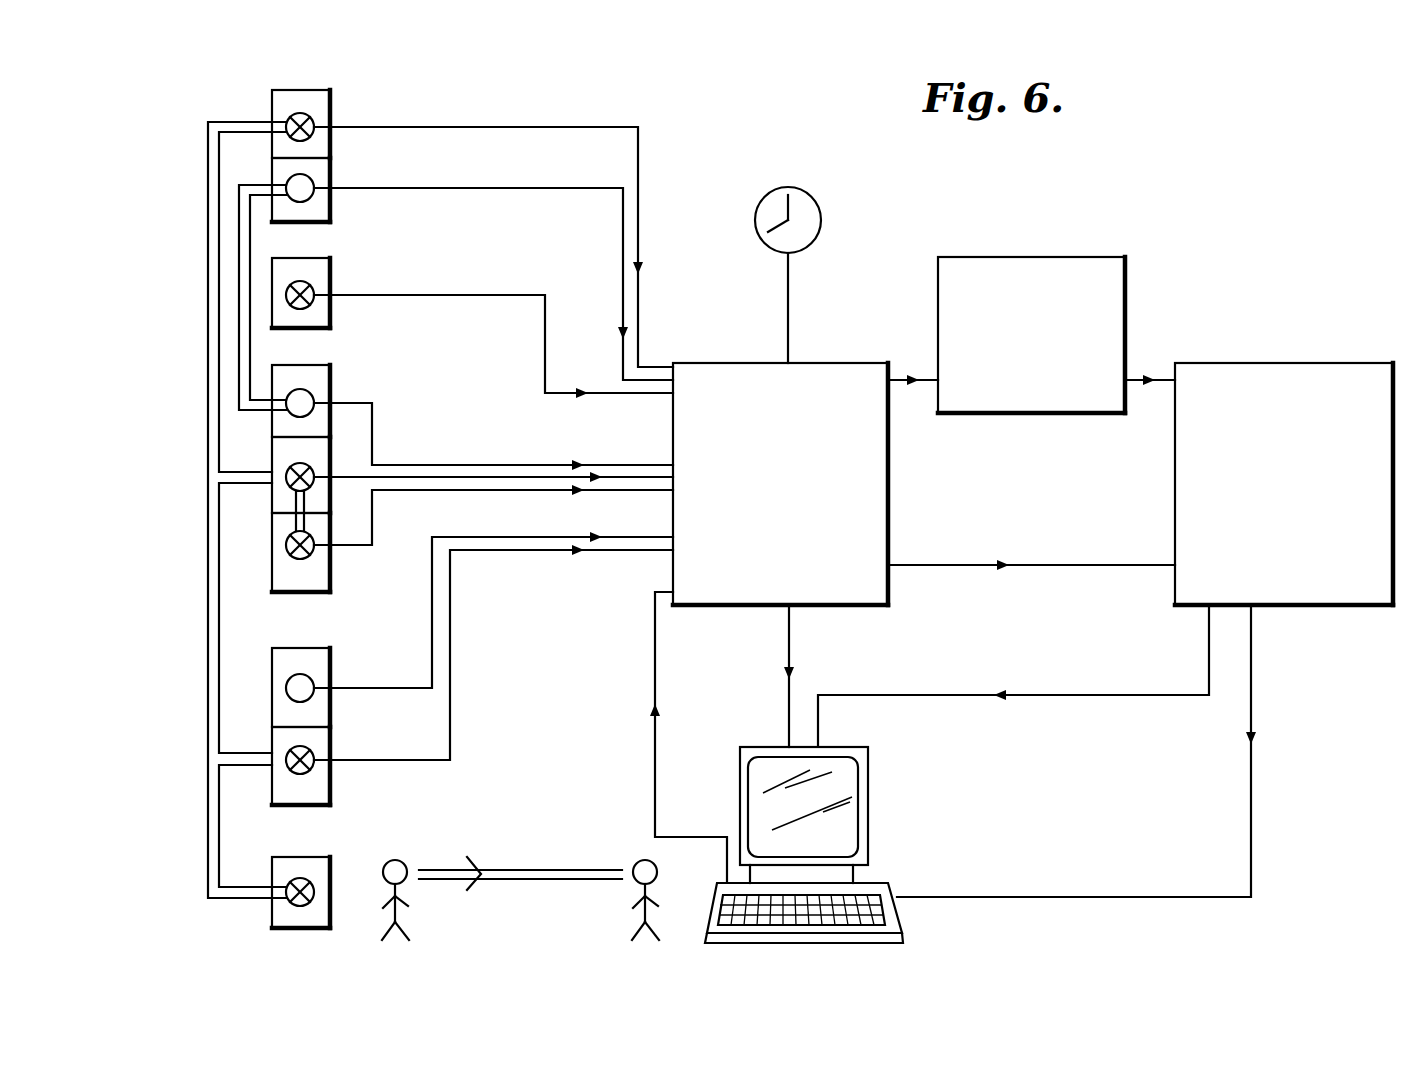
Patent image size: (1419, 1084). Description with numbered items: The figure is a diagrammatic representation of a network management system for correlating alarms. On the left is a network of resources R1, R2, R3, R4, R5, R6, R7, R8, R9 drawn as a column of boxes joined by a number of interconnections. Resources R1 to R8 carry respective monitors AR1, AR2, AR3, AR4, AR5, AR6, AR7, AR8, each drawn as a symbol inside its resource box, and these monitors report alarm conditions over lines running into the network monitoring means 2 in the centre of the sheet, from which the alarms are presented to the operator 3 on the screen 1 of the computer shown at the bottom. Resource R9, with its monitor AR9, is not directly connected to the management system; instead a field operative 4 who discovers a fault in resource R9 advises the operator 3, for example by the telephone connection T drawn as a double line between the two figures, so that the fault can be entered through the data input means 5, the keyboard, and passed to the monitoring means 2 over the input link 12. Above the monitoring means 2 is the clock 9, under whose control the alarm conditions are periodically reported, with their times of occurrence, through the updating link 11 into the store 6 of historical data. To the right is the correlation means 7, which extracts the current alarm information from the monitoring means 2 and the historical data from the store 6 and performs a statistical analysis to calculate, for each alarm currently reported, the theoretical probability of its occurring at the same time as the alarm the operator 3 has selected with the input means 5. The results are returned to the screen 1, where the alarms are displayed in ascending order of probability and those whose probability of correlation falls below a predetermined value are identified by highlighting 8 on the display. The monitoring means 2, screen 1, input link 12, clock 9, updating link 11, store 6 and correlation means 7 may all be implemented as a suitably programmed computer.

The screen 1 is at (862, 758).
The network monitoring means 2 is at (770, 542).
The operator 3 is at (640, 910).
The field operative 4 is at (400, 912).
The data input means 5 is at (883, 912).
The store 6 is at (1021, 399).
The correlation means 7 is at (1274, 542).
The highlighting 8 is at (838, 820).
The clock 9 is at (812, 192).
The updating link 11 is at (925, 378).
The input link 12 is at (655, 757).
The telephone connection T is at (528, 878).
The resource R1 is at (281, 105).
The resource R2 is at (278, 172).
The resource R3 is at (282, 308).
The resource R4 is at (282, 378).
The resource R5 is at (282, 458).
The resource R6 is at (282, 578).
The resource R7 is at (283, 713).
The resource R8 is at (283, 792).
The resource R9 is at (278, 918).
The monitor AR1 is at (318, 107).
The monitor AR2 is at (320, 176).
The monitor AR3 is at (320, 276).
The monitor AR4 is at (320, 385).
The monitor AR5 is at (320, 452).
The monitor AR6 is at (320, 578).
The monitor AR7 is at (320, 672).
The monitor AR8 is at (320, 748).
The monitor AR9 is at (318, 858).